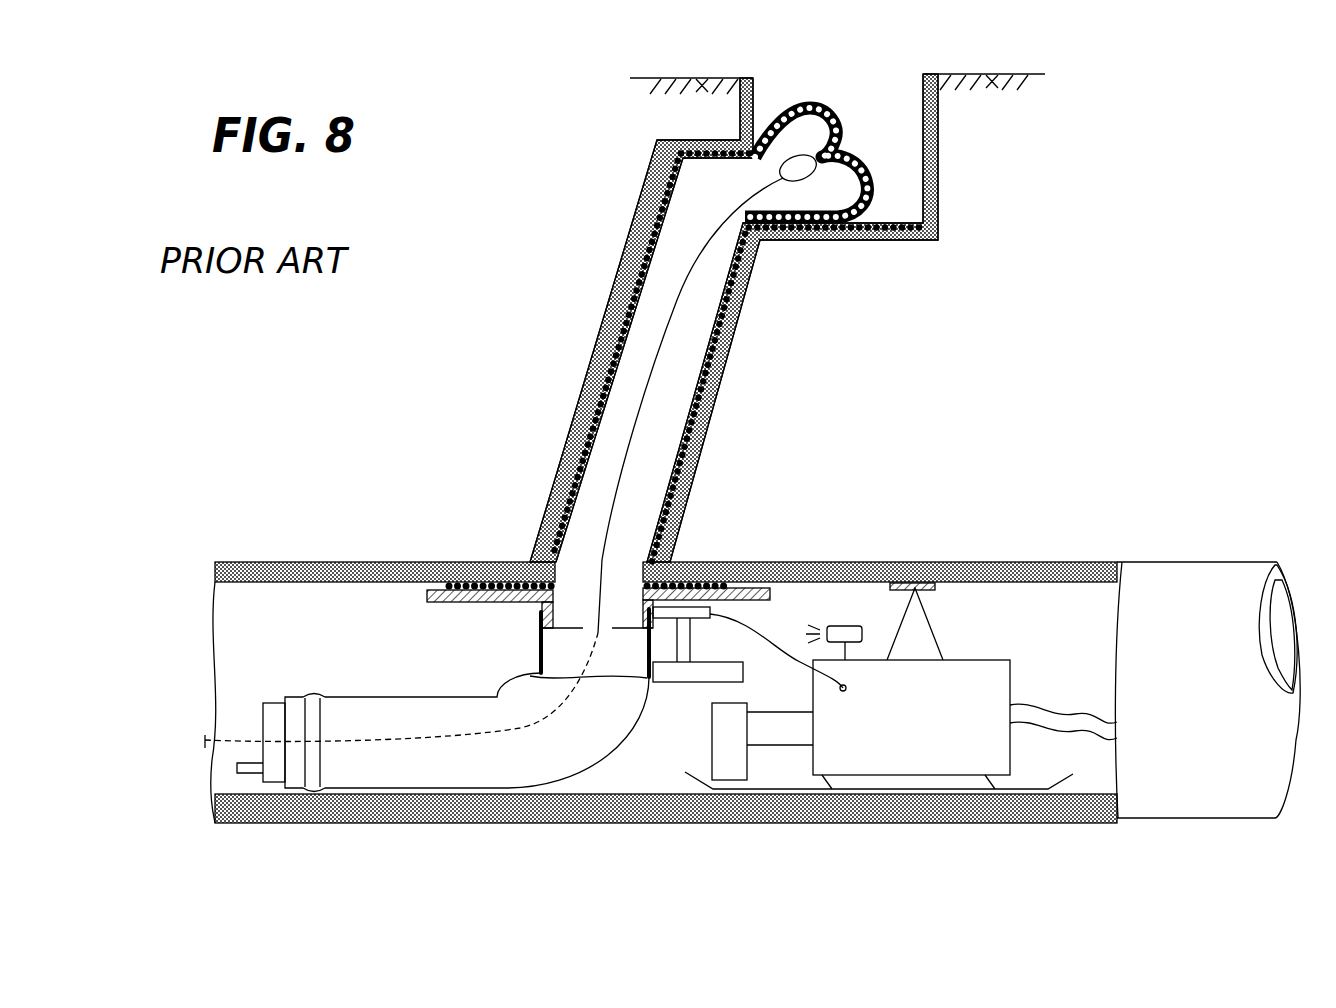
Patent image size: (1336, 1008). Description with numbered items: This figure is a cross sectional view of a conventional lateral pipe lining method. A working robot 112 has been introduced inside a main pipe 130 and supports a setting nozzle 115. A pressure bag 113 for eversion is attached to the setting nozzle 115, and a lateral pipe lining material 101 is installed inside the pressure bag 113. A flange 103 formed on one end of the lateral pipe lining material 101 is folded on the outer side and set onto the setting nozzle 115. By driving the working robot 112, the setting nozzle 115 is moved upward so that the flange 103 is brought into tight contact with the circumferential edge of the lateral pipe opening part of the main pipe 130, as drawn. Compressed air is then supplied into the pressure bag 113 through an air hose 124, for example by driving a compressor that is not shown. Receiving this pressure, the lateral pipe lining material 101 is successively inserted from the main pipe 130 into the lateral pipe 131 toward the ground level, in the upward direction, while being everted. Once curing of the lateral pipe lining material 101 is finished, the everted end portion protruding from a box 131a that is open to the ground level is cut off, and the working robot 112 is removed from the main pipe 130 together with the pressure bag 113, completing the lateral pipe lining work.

The lateral pipe lining material 101 is at (798, 112).
The box 131a is at (908, 95).
The lateral pipe 131 is at (740, 318).
The flange 103 is at (478, 562).
The setting nozzle 115 is at (478, 603).
The pressure bag 113 is at (363, 697).
The air hose 124 is at (237, 771).
The working robot 112 is at (985, 665).
The main pipe 130 is at (1188, 808).